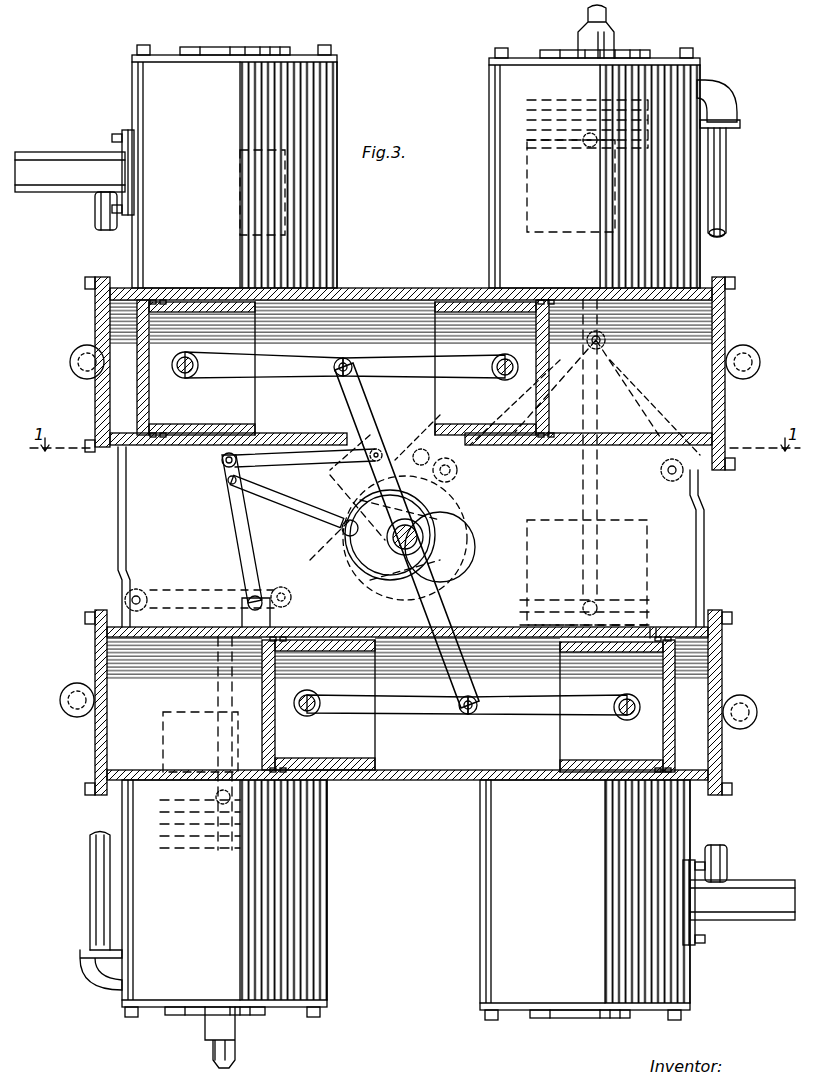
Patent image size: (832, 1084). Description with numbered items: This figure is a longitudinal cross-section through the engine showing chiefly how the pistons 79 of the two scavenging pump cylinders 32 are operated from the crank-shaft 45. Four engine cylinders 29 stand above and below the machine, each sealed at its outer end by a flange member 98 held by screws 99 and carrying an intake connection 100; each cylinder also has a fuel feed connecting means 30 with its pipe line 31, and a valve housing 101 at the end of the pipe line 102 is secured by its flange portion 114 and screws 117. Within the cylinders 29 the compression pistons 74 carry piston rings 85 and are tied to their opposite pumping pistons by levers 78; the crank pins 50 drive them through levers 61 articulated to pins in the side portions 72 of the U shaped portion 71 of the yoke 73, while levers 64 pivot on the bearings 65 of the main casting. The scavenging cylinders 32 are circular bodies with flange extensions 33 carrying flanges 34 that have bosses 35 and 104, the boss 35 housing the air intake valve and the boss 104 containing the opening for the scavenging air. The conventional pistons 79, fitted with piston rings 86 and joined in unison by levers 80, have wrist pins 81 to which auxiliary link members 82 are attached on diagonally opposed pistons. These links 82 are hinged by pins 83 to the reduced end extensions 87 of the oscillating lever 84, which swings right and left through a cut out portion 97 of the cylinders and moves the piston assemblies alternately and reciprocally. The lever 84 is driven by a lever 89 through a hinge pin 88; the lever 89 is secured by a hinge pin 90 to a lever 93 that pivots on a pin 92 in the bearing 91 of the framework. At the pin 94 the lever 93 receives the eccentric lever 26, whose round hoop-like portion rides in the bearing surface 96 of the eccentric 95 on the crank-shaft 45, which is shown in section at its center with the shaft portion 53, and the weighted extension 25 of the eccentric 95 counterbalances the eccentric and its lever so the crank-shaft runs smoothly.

The weighted extension 25 is at (470, 540).
The eccentric lever 26 is at (306, 505).
The cylinder 29 is at (222, 135).
The fuel feed connecting means 30 is at (727, 90).
The pipe line 31 is at (730, 131).
The scavenging pump cylinder 32 is at (718, 275).
The flange extension 33 is at (735, 284).
The flange 34 is at (726, 325).
The boss 35 is at (760, 355).
The crank-shaft 45 is at (470, 496).
The crank pin 50 is at (458, 470).
The crank shaft 53 is at (418, 540).
The lever 61 is at (470, 390).
The lever 64 is at (658, 415).
The bearing 65 is at (672, 482).
The U shaped portion 71 is at (600, 390).
The side portion 72 is at (610, 342).
The yoke 73 is at (600, 458).
The piston 74 is at (628, 520).
The lever 78 is at (583, 268).
The piston 79 is at (137, 400).
The lever 80 is at (410, 375).
The wrist pin 81 is at (505, 355).
The auxiliary link member 82 is at (275, 372).
The hinge pin 83 is at (352, 367).
The lever 84 is at (445, 628).
The piston ring 85 is at (580, 145).
The piston ring 86 is at (165, 430).
The reduced end extension 87 is at (340, 360).
The hinge pin 88 is at (370, 455).
The lever 89 is at (292, 470).
The hinge pin 90 is at (222, 460).
The bearing 91 is at (285, 608).
The pin 92 is at (255, 596).
The lever 93 is at (240, 520).
The pin 94 is at (230, 482).
The eccentric 95 is at (372, 560).
The bearing surface 96 is at (355, 500).
The cut out portion 97 is at (422, 452).
The flange member 98 is at (256, 48).
The screw 99 is at (218, 48).
The intake connection 100 is at (612, 30).
The valve housing 101 is at (58, 158).
The pipe line 102 is at (95, 206).
The boss 104 is at (83, 348).
The flange portion 114 is at (127, 135).
The screw 117 is at (113, 138).